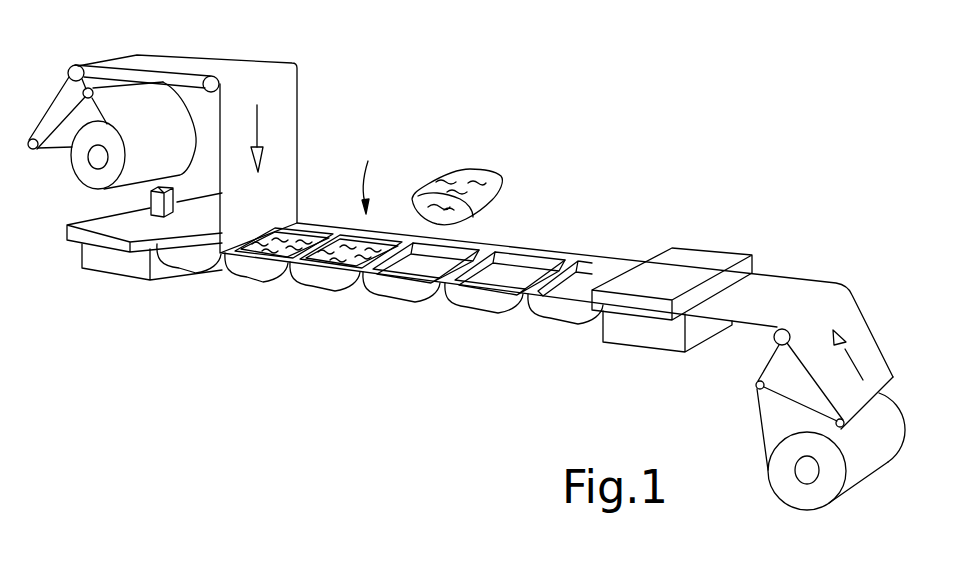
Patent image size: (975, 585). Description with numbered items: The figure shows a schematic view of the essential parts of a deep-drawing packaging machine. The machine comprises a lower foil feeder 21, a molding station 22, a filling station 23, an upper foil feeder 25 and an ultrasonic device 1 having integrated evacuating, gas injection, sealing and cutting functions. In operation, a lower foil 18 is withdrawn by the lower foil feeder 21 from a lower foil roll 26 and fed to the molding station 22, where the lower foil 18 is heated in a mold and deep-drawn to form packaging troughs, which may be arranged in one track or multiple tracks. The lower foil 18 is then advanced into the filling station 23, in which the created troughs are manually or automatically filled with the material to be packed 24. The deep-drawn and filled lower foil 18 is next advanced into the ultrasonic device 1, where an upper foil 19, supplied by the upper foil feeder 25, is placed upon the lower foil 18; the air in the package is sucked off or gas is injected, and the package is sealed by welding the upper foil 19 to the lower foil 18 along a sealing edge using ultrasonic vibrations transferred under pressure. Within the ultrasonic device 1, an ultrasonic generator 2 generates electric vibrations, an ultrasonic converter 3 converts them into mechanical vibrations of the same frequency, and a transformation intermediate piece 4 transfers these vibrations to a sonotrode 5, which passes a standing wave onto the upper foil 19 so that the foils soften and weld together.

The ultrasonic device 1 is at (115, 329).
The ultrasonic generator 2 is at (209, 265).
The ultrasonic converter 3 is at (209, 265).
The transformation intermediate piece 4 is at (177, 198).
The sonotrode 5 is at (97, 240).
The lower foil 18 is at (508, 272).
The upper foil 19 is at (282, 175).
The lower foil feeder 21 is at (887, 327).
The molding station 22 is at (670, 267).
The filling station 23 is at (378, 175).
The material to be packed 24 is at (483, 172).
The upper foil feeder 25 is at (53, 83).
The lower foil roll 26 is at (789, 481).